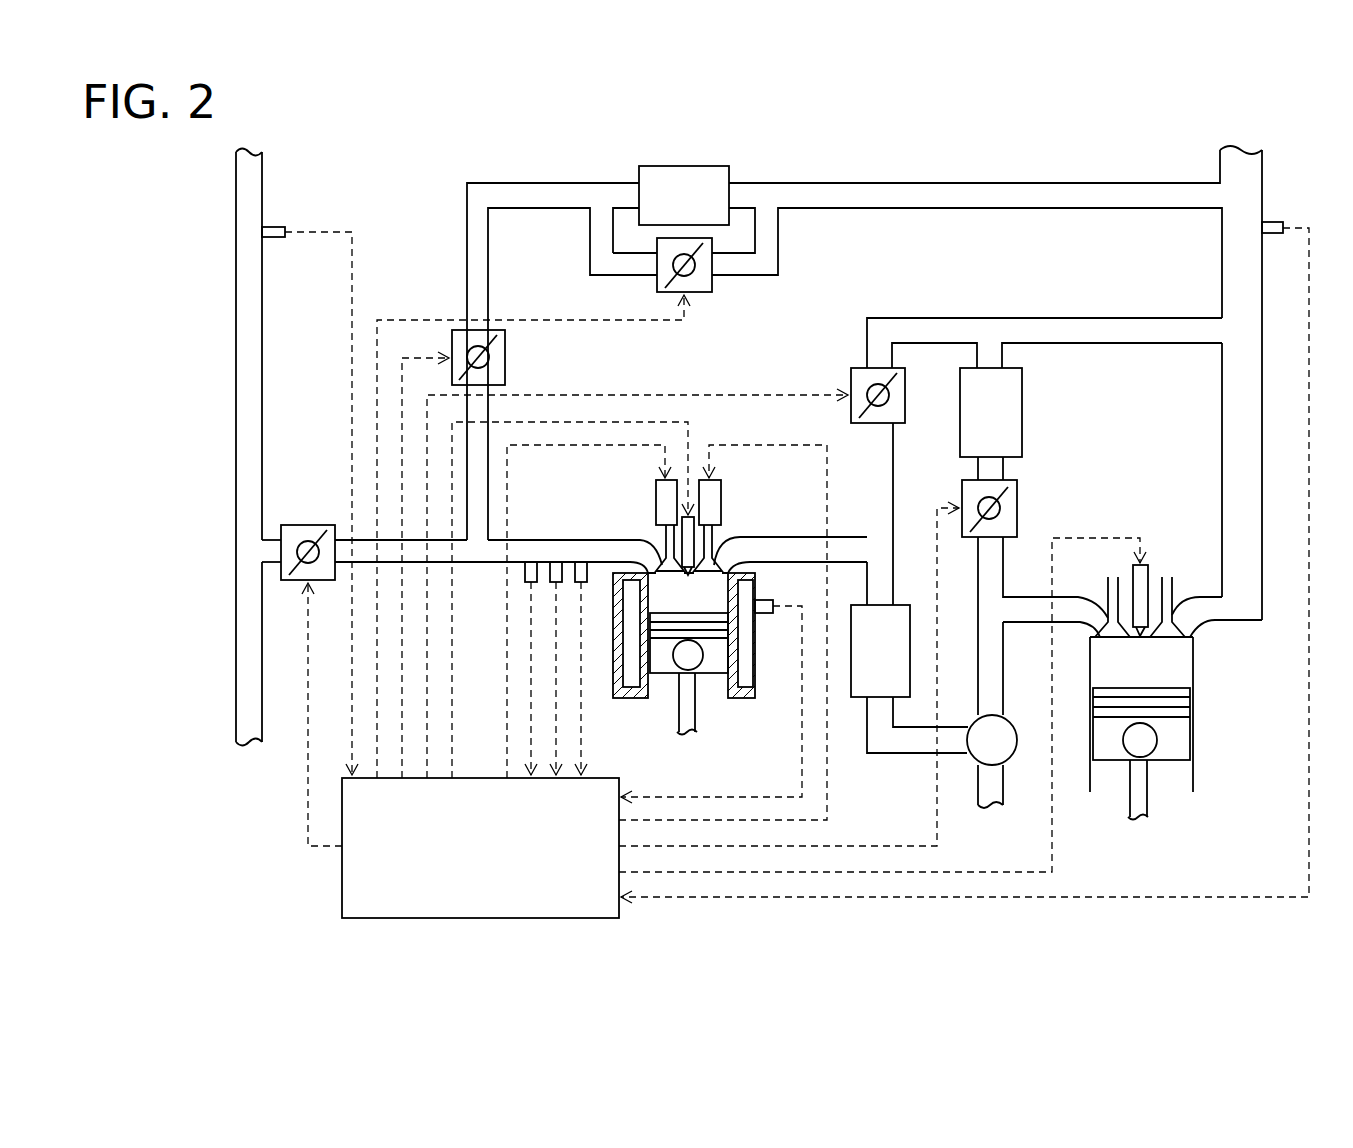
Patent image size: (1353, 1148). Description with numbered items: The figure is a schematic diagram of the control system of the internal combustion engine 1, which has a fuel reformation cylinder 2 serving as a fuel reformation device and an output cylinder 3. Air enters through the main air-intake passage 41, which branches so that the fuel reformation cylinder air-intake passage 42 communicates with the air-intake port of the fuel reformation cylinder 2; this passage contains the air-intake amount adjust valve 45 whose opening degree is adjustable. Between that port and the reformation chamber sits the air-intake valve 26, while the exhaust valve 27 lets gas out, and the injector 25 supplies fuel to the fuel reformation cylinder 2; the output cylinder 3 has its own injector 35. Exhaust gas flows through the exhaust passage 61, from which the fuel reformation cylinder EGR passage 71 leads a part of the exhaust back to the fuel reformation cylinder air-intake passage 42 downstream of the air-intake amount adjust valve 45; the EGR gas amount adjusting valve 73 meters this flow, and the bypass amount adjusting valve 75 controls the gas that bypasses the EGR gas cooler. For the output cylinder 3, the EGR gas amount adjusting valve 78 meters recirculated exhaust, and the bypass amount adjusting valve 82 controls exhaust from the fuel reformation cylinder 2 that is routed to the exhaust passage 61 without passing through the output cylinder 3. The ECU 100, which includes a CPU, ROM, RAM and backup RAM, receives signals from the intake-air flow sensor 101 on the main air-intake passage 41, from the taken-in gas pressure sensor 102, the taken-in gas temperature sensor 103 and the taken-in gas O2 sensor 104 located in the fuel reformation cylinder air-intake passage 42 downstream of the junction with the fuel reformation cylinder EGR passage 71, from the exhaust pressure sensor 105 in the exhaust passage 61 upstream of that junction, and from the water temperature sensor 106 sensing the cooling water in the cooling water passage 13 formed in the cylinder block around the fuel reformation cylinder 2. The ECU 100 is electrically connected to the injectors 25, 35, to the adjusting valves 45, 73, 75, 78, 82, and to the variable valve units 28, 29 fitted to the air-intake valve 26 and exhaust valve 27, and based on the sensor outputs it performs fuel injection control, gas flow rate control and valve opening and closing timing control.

The internal combustion engine 1 is at (366, 152).
The fuel reformation cylinder 2 is at (740, 657).
The output cylinder 3 is at (1198, 731).
The cooling water passage 13 is at (748, 658).
The injector 25 is at (700, 530).
The air-intake valve 26 is at (666, 542).
The exhaust valve 27 is at (712, 542).
The variable valve unit 28 is at (657, 490).
The variable valve unit 29 is at (721, 490).
The injector 35 is at (1149, 576).
The main air-intake passage 41 is at (262, 355).
The fuel reformation cylinder air-intake passage 42 is at (479, 560).
The air-intake amount adjust valve 45 is at (305, 525).
The exhaust passage 61 is at (1222, 416).
The fuel reformation cylinder EGR passage 71 is at (467, 258).
The EGR gas amount adjusting valve 73 is at (505, 360).
The bypass amount adjusting valve 75 is at (712, 288).
The EGR gas amount adjusting valve 78 is at (1017, 500).
The bypass amount adjusting valve 82 is at (851, 382).
The ECU 100 is at (342, 895).
The intake-air flow sensor 101 is at (275, 225).
The taken-in gas pressure sensor 102 is at (531, 560).
The taken-in gas temperature sensor 103 is at (555, 562).
The taken-in gas O2 sensor 104 is at (579, 560).
The exhaust pressure sensor 105 is at (1283, 226).
The water temperature sensor 106 is at (773, 604).